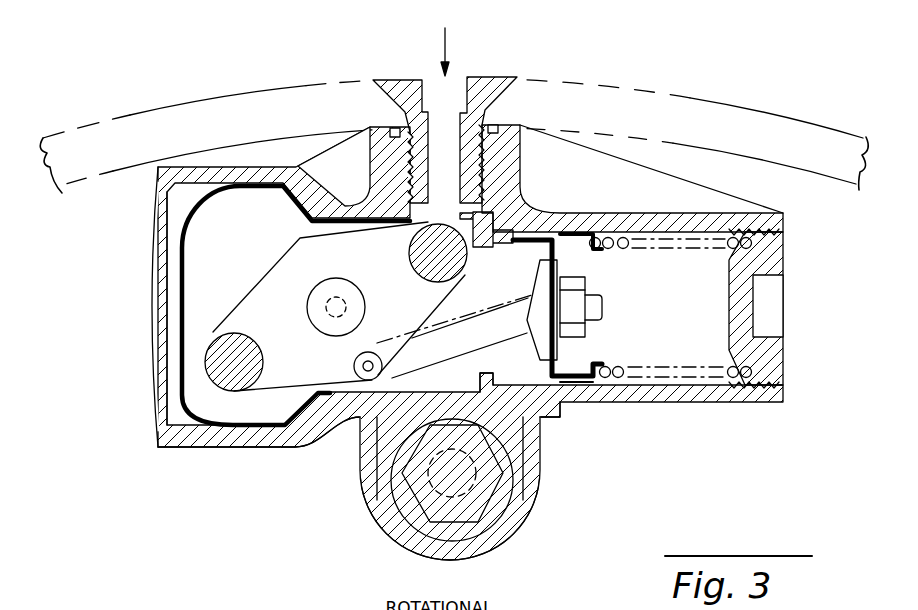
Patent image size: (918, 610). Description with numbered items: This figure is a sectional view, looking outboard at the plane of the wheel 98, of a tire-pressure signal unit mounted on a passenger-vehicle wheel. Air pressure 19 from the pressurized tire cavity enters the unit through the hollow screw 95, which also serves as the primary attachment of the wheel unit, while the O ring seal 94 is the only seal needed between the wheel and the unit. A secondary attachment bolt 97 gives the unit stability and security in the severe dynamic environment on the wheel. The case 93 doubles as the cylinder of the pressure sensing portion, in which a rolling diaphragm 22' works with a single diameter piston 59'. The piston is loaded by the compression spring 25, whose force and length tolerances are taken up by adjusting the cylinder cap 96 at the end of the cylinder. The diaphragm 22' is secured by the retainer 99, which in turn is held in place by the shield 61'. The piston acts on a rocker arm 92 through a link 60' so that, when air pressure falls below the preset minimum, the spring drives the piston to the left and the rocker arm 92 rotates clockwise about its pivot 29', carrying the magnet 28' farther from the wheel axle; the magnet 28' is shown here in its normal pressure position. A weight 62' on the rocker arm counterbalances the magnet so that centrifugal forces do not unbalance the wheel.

The air pressure 19 is at (447, 42).
The hollow screw 95 is at (483, 77).
The O ring seal 94 is at (495, 126).
The wheel 98 is at (742, 104).
The shield 61' is at (296, 258).
The compression spring 25 is at (655, 240).
The rocker arm 92 is at (280, 260).
The weight 62' is at (402, 253).
The pivot 29' is at (313, 307).
The link rod 60' is at (454, 324).
The single diameter piston 59' is at (669, 336).
The cylinder cap 96 is at (786, 368).
The retainer 99 is at (482, 390).
The magnet 28' is at (224, 414).
The rolling diaphragm 22' is at (563, 354).
The case 93 is at (594, 404).
The secondary attachment bolt 97 is at (490, 500).